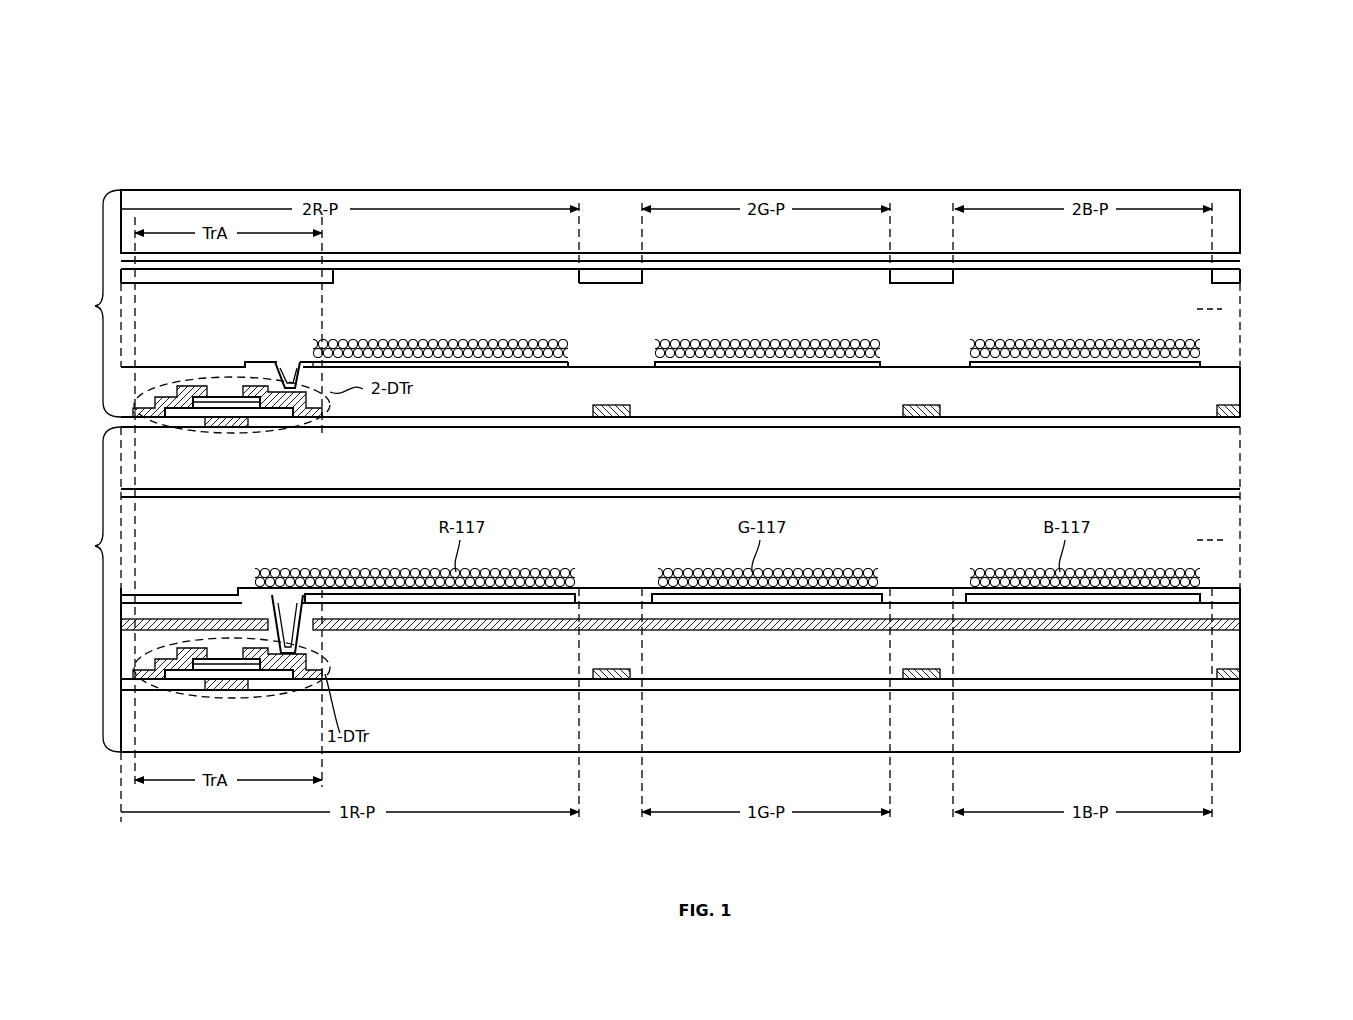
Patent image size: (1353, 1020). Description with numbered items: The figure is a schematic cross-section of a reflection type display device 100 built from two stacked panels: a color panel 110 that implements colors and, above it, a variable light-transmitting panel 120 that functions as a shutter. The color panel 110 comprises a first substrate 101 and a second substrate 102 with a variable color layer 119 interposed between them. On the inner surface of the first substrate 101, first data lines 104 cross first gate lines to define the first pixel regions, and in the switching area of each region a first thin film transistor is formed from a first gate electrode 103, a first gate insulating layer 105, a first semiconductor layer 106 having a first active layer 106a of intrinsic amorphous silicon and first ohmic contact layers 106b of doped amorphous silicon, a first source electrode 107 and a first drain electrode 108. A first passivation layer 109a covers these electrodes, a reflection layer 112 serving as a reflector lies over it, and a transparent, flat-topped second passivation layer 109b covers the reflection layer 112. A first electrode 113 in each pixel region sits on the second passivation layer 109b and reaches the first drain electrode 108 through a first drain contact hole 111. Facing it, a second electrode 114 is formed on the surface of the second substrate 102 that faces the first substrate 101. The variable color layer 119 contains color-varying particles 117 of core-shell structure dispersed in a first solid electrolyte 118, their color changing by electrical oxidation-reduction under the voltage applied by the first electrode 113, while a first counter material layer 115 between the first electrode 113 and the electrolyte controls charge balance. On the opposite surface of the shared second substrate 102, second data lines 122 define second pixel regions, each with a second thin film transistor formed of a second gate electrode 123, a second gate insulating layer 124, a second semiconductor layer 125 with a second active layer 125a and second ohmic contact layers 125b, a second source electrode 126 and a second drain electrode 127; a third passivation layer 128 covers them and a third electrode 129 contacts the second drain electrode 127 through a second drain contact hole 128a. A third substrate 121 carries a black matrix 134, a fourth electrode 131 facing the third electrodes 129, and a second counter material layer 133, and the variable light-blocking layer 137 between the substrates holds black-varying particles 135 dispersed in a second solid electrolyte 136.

The reflection type display device 100 is at (1170, 138).
The first substrate 101 is at (1175, 732).
The second substrate 102 is at (1207, 470).
The first gate electrode 103 is at (232, 692).
The first data line 104 is at (605, 681).
The first gate insulating layer 105 is at (272, 681).
The first semiconductor layer 106 is at (198, 707).
The first active layer 106a is at (168, 681).
The first ohmic contact layers 106b is at (196, 681).
The first source electrode 107 is at (172, 660).
The first drain electrode 108 is at (318, 668).
The first passivation layer 109a is at (397, 650).
The second passivation layer 109b is at (452, 610).
The color panel 110 is at (84, 589).
The first drain contact hole 111 is at (289, 632).
The reflection layer 112 is at (501, 632).
The first electrode 113 is at (532, 600).
The second electrode 114 is at (1232, 489).
The first counter material layer 115 is at (1232, 593).
The color-varying particles 117 is at (1192, 574).
The first solid electrolyte 118 is at (1225, 540).
The variable color layer 119 is at (801, 557).
The variable light-transmitting panel 120 is at (84, 303).
The third substrate 121 is at (1175, 247).
The second data line 122 is at (605, 418).
The second gate electrode 123 is at (232, 428).
The second gate insulating layer 124 is at (272, 420).
The second semiconductor layer 125 is at (195, 445).
The second active layer 125a is at (163, 420).
The second ohmic contact layers 125b is at (193, 420).
The second source electrode 126 is at (193, 385).
The second drain electrode 127 is at (312, 420).
The third passivation layer 128 is at (409, 395).
The second drain contact hole 128a is at (289, 376).
The third electrode 129 is at (460, 369).
The fourth electrode 131 is at (512, 256).
The second counter material layer 133 is at (458, 264).
The black matrix 134 is at (1222, 273).
The black-varying particles 135 is at (1192, 344).
The second solid electrolyte 136 is at (1222, 309).
The variable light-blocking layer 137 is at (826, 333).